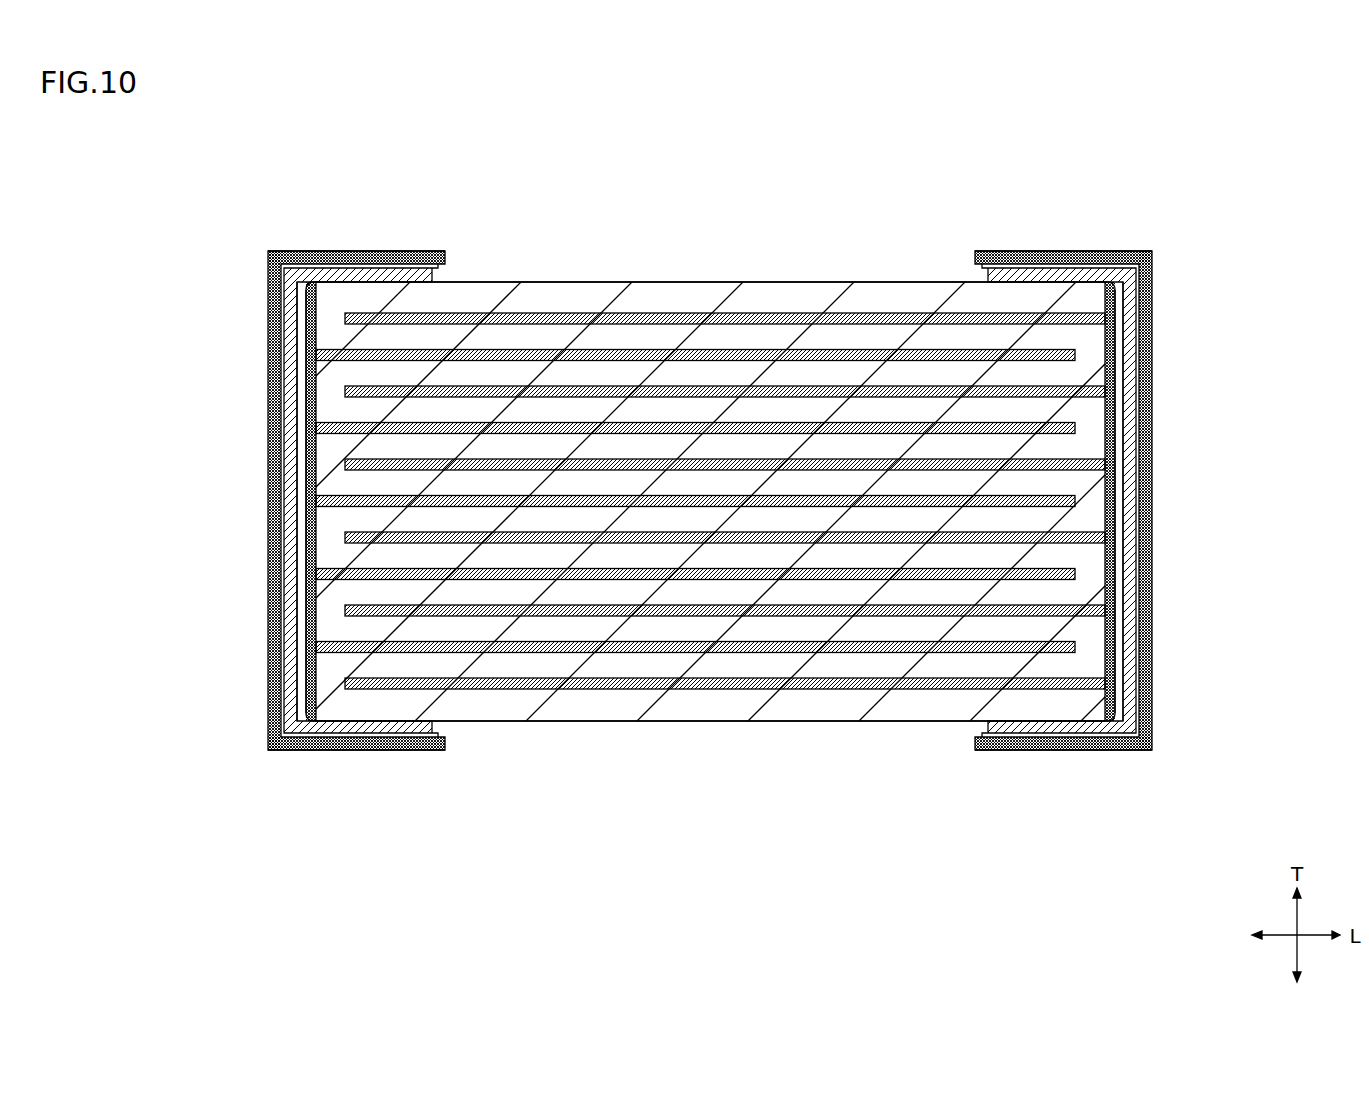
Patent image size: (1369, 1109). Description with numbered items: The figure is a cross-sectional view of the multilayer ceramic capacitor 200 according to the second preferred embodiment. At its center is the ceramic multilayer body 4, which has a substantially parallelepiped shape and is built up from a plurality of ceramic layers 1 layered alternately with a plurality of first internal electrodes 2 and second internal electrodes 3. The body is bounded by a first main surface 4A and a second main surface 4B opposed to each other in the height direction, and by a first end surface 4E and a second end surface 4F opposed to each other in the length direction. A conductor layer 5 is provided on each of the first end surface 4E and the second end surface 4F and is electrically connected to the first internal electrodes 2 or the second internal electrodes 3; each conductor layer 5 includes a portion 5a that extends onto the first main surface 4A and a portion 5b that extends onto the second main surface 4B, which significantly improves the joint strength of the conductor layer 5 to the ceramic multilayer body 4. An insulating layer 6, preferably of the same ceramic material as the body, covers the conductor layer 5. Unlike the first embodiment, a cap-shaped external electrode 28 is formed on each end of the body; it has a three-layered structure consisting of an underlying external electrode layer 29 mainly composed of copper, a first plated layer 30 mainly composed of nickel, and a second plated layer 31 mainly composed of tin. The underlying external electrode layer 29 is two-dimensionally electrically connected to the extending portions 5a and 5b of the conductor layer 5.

The multilayer ceramic capacitor 200 is at (134, 171).
The ceramic layer 1 is at (1088, 298).
The first internal electrode 2 is at (316, 352).
The second internal electrode 3 is at (378, 313).
The ceramic multilayer body 4 is at (806, 282).
The first main surface 4A is at (705, 730).
The second main surface 4B is at (681, 276).
The first end surface 4E is at (298, 455).
The second end surface 4F is at (1123, 452).
The conductor layer 5 is at (298, 487).
The portion extending to first main surface 5a is at (313, 751).
The portion extending to second main surface 5b is at (332, 268).
The insulating layer 6 is at (312, 508).
The external electrode 28 is at (710, 577).
The underlying external electrode layer 29 is at (417, 751).
The first plated layer 30 is at (377, 751).
The second plated layer 31 is at (353, 751).